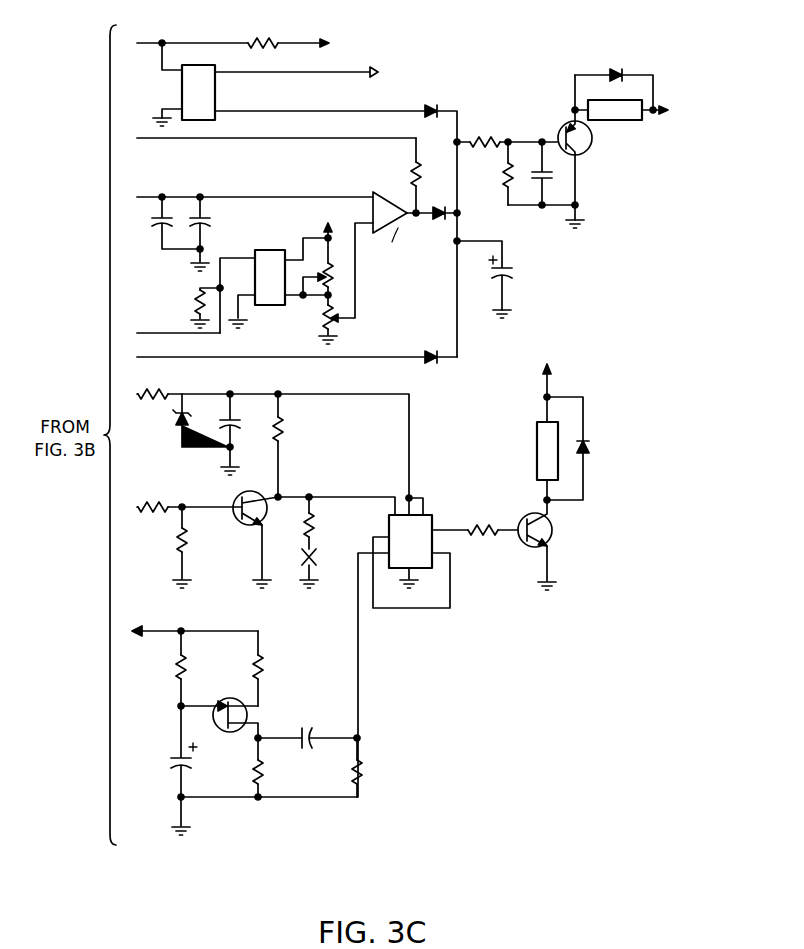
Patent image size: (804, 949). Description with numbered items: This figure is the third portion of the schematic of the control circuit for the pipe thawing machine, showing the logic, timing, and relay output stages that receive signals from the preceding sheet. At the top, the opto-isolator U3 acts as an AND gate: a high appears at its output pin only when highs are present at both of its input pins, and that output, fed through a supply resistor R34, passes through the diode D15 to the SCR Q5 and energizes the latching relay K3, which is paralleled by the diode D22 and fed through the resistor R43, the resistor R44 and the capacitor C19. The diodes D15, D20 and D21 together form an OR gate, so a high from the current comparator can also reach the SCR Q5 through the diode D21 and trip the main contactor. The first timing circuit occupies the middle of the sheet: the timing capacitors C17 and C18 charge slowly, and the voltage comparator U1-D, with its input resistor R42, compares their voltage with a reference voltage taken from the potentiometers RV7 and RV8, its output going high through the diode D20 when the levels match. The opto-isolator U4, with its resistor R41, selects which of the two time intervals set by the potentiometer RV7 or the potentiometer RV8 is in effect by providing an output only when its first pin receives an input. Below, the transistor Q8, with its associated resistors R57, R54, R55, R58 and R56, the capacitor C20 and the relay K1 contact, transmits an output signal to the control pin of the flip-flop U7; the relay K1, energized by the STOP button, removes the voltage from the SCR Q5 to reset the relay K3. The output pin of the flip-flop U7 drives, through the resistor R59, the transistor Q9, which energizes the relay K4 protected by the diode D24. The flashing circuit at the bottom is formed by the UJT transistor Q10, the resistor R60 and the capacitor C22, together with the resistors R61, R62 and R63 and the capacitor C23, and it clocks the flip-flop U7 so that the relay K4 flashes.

The resistor R34 is at (240, 35).
The opto-isolator U3 is at (289, 84).
The diode D15 is at (437, 221).
The resistor R43 is at (507, 132).
The resistor R44 is at (495, 173).
The capacitor C19 is at (552, 173).
The SCR Q5 is at (587, 140).
The relay K3 is at (630, 112).
The diode D22 is at (614, 79).
The resistor R42 is at (397, 175).
The voltage comparator U1-D is at (382, 257).
The diode D20 is at (441, 203).
The diode D21 is at (437, 347).
The capacitor C17 is at (159, 223).
The capacitor C18 is at (216, 234).
The opto-isolator U4 is at (274, 285).
The resistor R41 is at (190, 308).
The potentiometer RV7 is at (326, 253).
The potentiometer RV8 is at (312, 319).
The resistor R57 is at (280, 442).
The capacitor C20 is at (241, 434).
The resistor R58 is at (295, 447).
The resistor R54 is at (189, 497).
The resistor R55 is at (196, 547).
The transistor Q8 is at (245, 539).
The resistor R56 is at (325, 523).
The relay K1 is at (318, 568).
The flip-flop U7 is at (404, 656).
The resistor R59 is at (475, 521).
The transistor Q9 is at (548, 535).
The relay K4 is at (548, 415).
The diode D24 is at (584, 448).
The resistor R60 is at (162, 670).
The resistor R61 is at (274, 668).
The UJT transistor Q10 is at (219, 709).
The capacitor C22 is at (164, 770).
The resistor R62 is at (274, 767).
The capacitor C23 is at (309, 730).
The resistor R63 is at (373, 767).